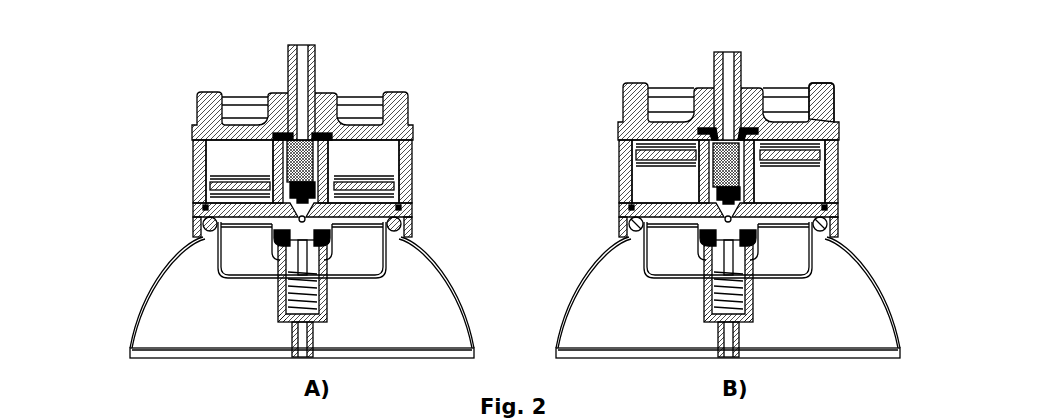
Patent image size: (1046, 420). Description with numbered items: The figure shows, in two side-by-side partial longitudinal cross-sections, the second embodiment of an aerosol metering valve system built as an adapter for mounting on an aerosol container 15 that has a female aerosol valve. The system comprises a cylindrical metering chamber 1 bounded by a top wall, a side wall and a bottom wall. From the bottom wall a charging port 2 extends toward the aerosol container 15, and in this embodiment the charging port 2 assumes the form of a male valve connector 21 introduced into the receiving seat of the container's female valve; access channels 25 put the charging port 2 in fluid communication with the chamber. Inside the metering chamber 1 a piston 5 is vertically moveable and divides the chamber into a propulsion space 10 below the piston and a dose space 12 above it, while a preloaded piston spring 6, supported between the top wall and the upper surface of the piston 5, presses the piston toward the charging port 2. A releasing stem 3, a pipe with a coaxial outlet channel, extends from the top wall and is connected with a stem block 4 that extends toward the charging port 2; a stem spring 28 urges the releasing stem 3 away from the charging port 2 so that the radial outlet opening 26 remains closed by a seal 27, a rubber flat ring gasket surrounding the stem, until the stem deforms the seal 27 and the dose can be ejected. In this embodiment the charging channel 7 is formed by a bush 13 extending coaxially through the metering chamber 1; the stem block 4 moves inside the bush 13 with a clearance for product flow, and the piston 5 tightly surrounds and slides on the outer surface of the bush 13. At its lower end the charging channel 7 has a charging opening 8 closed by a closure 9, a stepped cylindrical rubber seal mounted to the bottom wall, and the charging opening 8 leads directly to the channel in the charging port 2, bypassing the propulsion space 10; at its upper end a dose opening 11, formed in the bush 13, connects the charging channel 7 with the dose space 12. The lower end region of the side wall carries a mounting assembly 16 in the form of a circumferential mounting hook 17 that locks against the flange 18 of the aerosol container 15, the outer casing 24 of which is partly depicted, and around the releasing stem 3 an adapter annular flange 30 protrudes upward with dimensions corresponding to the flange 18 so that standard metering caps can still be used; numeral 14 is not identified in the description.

The metering chamber 1 is at (400, 160).
The charging port 2 is at (322, 238).
The releasing stem 3 is at (740, 65).
The stem block 4 is at (322, 161).
The piston 5 is at (387, 192).
The piston spring 6 is at (678, 140).
The charging channel 7 is at (712, 166).
The charging opening 8 is at (310, 208).
The closure 9 is at (723, 201).
The propulsion space 10 is at (800, 180).
The dose opening 11 is at (327, 145).
The dose space 12 is at (220, 157).
The bush 13 is at (755, 162).
The base 14 is at (296, 384).
The aerosol container 15 is at (124, 333).
The mounting assembly 16 is at (848, 238).
The mounting hook 17 is at (203, 237).
The flange 18 is at (210, 227).
The male valve connector 21 is at (310, 252).
The outer casing 24 is at (893, 323).
The access channels 25 is at (280, 208).
The outlet opening 26 is at (742, 143).
The seal 27 is at (758, 131).
The stem spring 28 is at (287, 173).
The adapter annular flange 30 is at (823, 97).